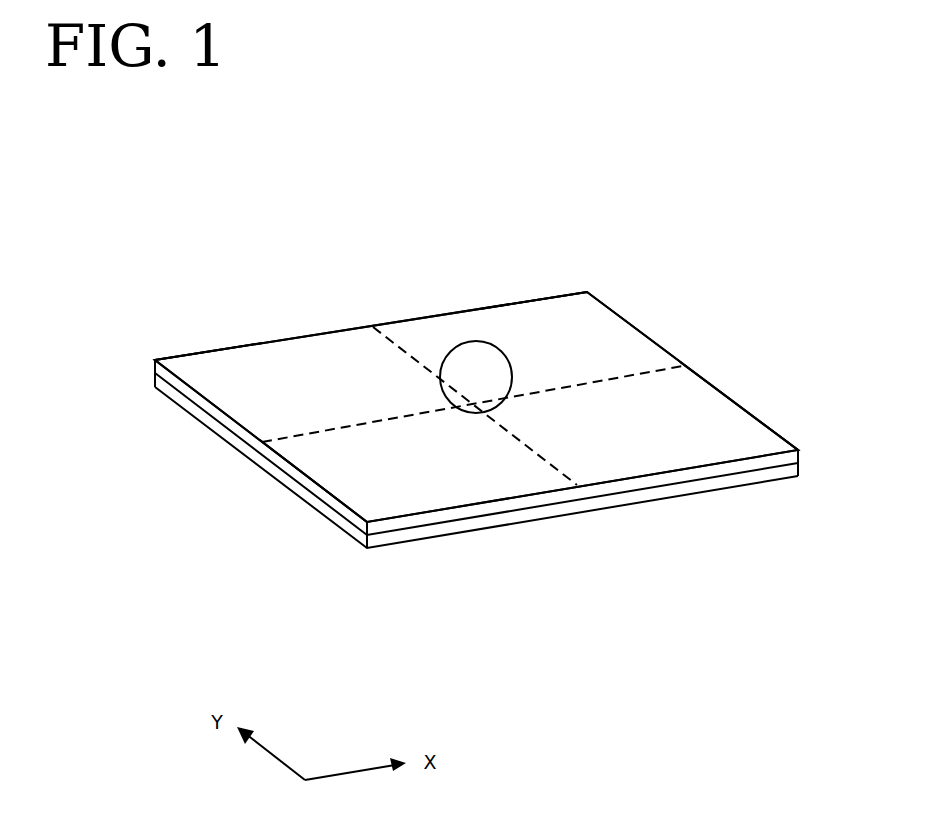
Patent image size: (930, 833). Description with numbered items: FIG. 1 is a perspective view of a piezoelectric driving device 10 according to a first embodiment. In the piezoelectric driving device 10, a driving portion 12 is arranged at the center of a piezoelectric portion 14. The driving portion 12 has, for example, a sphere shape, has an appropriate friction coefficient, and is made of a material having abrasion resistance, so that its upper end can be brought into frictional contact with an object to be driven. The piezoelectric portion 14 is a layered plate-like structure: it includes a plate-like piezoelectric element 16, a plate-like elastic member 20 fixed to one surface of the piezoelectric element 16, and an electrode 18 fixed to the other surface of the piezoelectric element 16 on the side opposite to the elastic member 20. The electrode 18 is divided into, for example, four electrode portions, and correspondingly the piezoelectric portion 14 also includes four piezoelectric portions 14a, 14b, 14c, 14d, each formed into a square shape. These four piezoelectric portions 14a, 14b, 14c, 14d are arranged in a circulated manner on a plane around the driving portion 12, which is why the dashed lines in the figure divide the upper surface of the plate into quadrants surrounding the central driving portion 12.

The piezoelectric driving device 10 is at (678, 208).
The driving portion 12 is at (475, 344).
The piezoelectric portion 14 is at (654, 361).
The piezoelectric portion 14a is at (553, 304).
The piezoelectric portion 14b is at (715, 408).
The piezoelectric portion 14c is at (352, 486).
The piezoelectric portion 14d is at (202, 370).
The piezoelectric element 16 is at (435, 530).
The electrode 18 is at (581, 523).
The elastic member 20 is at (398, 323).